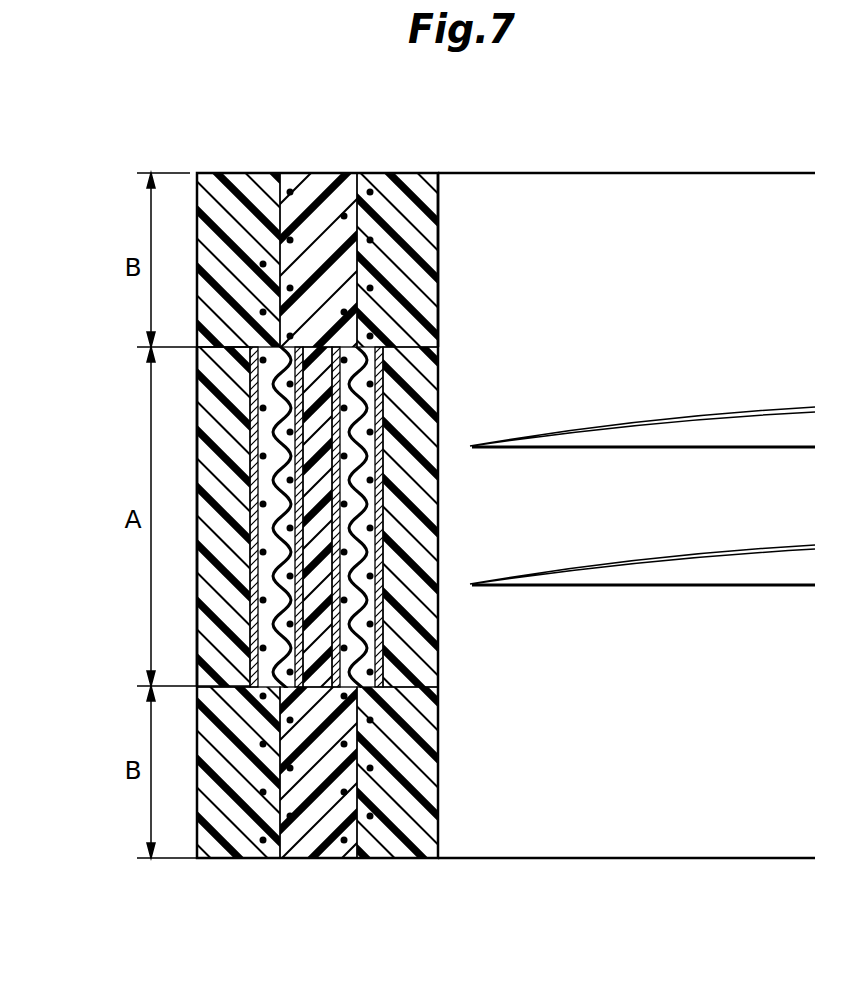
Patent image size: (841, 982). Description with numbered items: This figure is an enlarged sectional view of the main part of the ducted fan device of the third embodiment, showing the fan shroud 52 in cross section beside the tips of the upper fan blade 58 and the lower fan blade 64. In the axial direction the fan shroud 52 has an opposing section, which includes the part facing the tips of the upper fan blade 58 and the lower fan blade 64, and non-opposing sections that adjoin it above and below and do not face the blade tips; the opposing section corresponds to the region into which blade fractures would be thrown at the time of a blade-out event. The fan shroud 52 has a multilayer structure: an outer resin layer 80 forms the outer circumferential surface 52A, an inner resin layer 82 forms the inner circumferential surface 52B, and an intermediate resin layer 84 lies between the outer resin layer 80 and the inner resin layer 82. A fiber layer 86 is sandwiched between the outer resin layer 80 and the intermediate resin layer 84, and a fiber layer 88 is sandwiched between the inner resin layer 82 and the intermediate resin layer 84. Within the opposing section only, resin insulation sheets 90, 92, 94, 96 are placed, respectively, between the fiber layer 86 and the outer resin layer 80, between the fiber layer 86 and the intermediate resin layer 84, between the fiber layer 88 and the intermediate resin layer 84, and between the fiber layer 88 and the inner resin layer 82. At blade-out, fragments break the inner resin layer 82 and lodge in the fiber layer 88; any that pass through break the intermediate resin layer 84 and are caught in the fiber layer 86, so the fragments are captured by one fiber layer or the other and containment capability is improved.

The fan shroud 52 is at (197, 170).
The outer circumferential surface 52A is at (197, 584).
The inner circumferential surface 52B is at (438, 228).
The upper fan blade 58 is at (717, 425).
The lower fan blade 64 is at (737, 572).
The outer resin layer 80 is at (217, 845).
The inner resin layer 82 is at (418, 845).
The intermediate resin layer 84 is at (323, 848).
The fiber layer 86 is at (283, 373).
The fiber layer 88 is at (368, 467).
The resin insulation sheet 90 is at (253, 633).
The resin insulation sheet 92 is at (298, 515).
The resin insulation sheet 94 is at (337, 618).
The resin insulation sheet 96 is at (383, 412).